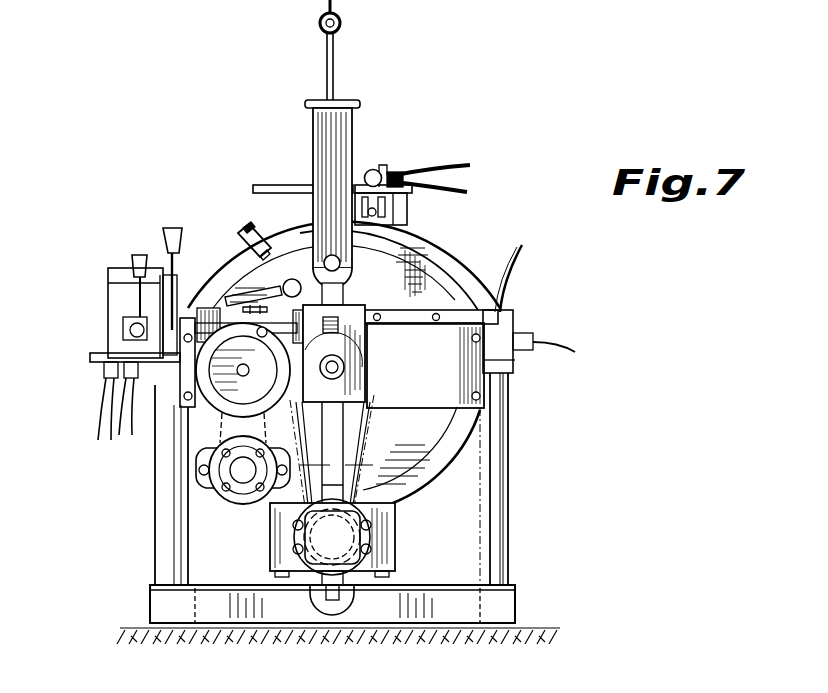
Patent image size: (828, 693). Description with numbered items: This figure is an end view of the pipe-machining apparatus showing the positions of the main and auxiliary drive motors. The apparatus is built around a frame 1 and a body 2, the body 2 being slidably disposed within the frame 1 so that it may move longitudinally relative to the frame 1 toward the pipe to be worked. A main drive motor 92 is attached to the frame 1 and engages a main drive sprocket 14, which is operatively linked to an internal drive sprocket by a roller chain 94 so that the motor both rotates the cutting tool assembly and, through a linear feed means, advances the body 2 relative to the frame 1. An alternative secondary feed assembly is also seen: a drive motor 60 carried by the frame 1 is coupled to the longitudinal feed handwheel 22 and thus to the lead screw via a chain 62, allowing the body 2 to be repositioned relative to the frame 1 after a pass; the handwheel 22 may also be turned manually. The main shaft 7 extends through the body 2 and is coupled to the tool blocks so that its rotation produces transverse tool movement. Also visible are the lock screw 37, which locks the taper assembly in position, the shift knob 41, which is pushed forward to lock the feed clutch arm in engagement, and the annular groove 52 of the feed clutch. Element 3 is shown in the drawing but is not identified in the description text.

The frame 1 is at (508, 442).
The body 2 is at (450, 267).
The lifting rod with hook 3 is at (334, 60).
The main shaft 7 is at (340, 368).
The main drive sprocket 14 is at (362, 388).
The longitudinal feed handwheel 22 is at (205, 428).
The lock screw 37 is at (235, 298).
The shift knob 41 is at (378, 173).
The annular groove 52 is at (282, 278).
The drive motor 60 is at (215, 492).
The chain 62 is at (362, 430).
The main drive motor 92 is at (360, 542).
The roller chain 94 is at (300, 469).